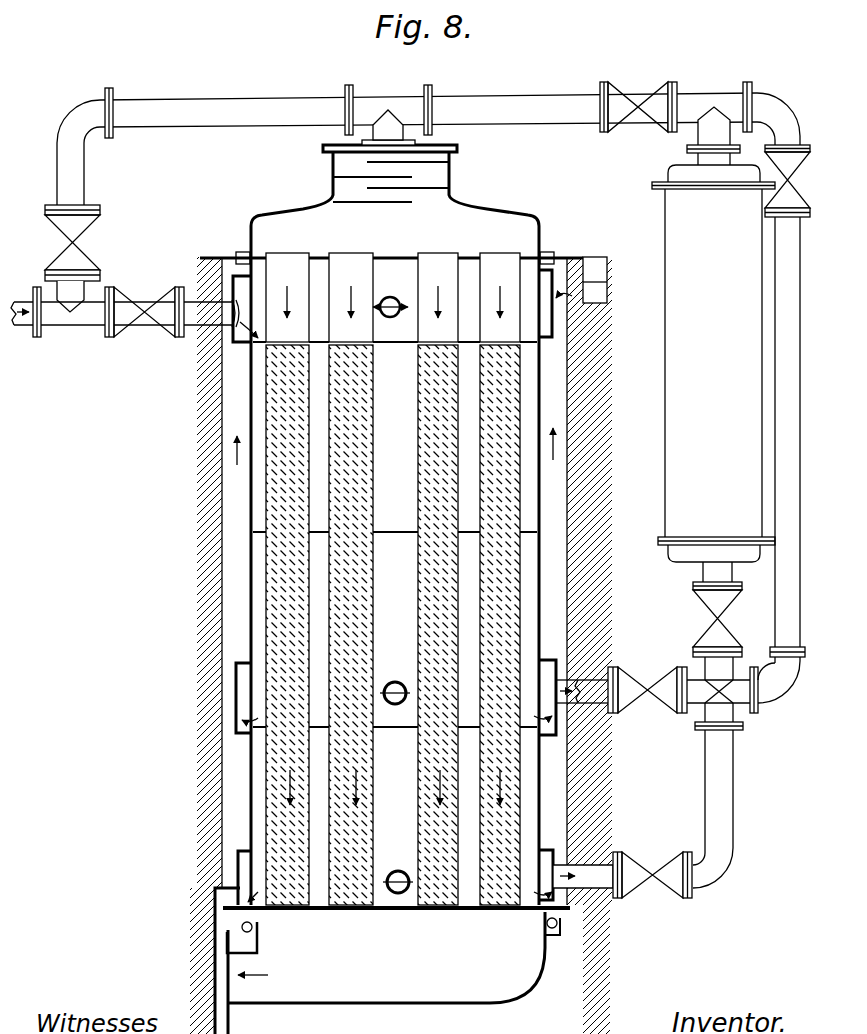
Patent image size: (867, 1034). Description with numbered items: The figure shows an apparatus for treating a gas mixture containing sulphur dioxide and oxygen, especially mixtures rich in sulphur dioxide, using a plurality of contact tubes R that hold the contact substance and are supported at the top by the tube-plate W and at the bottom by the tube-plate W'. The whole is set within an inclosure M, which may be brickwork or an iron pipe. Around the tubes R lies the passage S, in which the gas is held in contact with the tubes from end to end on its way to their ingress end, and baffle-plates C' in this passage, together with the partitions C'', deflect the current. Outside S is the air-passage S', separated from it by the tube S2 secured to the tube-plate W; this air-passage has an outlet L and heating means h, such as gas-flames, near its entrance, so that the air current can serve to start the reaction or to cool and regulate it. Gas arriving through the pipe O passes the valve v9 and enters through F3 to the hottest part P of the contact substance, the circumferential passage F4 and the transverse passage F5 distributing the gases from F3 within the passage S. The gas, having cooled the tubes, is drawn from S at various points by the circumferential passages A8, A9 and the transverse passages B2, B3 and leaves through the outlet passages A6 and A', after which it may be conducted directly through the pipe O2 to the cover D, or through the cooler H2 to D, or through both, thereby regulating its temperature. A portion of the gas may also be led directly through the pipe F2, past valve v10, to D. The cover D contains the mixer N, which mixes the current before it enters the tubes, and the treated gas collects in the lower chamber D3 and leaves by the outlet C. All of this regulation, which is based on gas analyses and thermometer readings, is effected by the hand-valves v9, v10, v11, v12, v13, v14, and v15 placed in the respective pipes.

The pipe F2 is at (428, 143).
The hand-valve v10 is at (78, 258).
The hand-valve v9 is at (144, 310).
The pipe O is at (24, 330).
The passage F3 is at (204, 329).
The tube S2 is at (247, 408).
The inclosure M is at (395, 645).
The circumferential passage A9 is at (238, 700).
The circumferential passage A8 is at (240, 872).
The heating means h is at (400, 935).
The outlet passage C is at (252, 987).
The bottom chamber D3 is at (380, 961).
The transverse passage B2 is at (398, 871).
The transverse passage B3 is at (395, 682).
The baffle partition C'' is at (394, 643).
The baffle-plate C' is at (394, 351).
The hottest part of the contact substance P is at (393, 579).
The contact chamber R is at (393, 625).
The passage S is at (395, 534).
The transverse passage F5 is at (390, 298).
The circumferential passage F4 is at (554, 303).
The tube-plate W is at (391, 245).
The outlet L is at (595, 267).
The cover D is at (395, 528).
The mixer N is at (390, 156).
The hand-valve v13 is at (638, 97).
The hand-valve v14 is at (790, 181).
The cooler H2 is at (713, 344).
The pipe O2 is at (781, 460).
The hand-valve v15 is at (731, 631).
The hand-valve v12 is at (668, 680).
The nozzle A' is at (557, 679).
The air-passage S' is at (591, 422).
The outlet passage A6 is at (573, 861).
The hand-valve v11 is at (678, 800).
The tube-plate W' is at (439, 917).